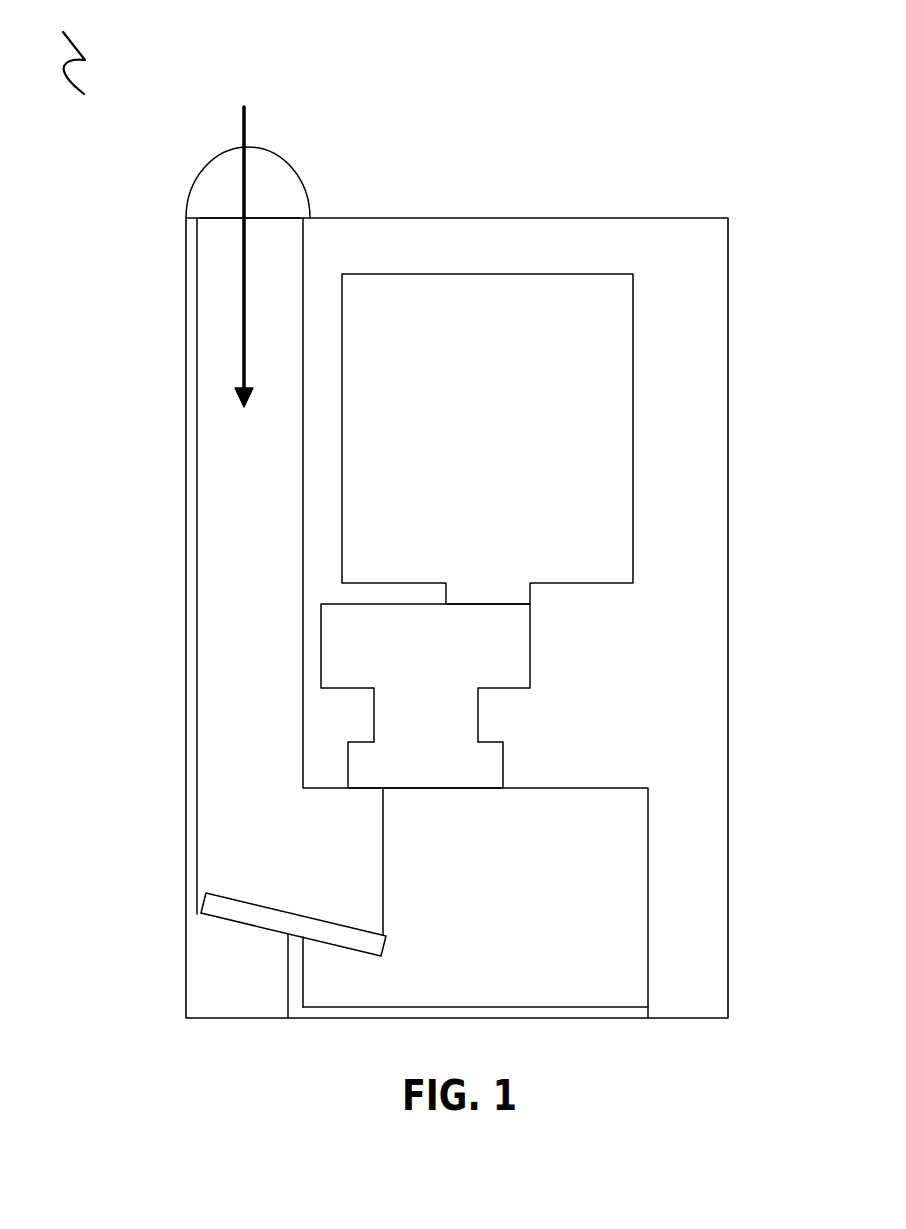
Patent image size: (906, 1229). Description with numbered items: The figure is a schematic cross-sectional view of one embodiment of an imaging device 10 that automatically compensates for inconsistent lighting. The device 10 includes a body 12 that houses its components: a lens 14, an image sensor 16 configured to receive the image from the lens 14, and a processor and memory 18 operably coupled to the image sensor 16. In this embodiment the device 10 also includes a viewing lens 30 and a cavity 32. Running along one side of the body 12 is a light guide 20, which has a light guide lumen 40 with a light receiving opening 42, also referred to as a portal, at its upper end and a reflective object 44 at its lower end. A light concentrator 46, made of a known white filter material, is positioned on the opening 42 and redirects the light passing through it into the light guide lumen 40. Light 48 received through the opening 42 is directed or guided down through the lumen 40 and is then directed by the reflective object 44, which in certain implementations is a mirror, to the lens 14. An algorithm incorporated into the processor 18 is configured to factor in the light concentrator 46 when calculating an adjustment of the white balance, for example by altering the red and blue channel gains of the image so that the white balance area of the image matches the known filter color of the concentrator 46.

The imaging device 10 is at (64, 51).
The body 12 is at (618, 218).
The lens 14 is at (505, 758).
The image sensor 16 is at (507, 647).
The processor and memory 18 is at (590, 420).
The light guide 20 is at (138, 673).
The viewing lens 30 is at (595, 1007).
The cavity 32 is at (577, 888).
The light guide lumen 40 is at (238, 585).
The light receiving opening 42 is at (215, 209).
The reflective object 44 is at (243, 900).
The light concentrator 46 is at (197, 176).
The light 48 is at (244, 316).